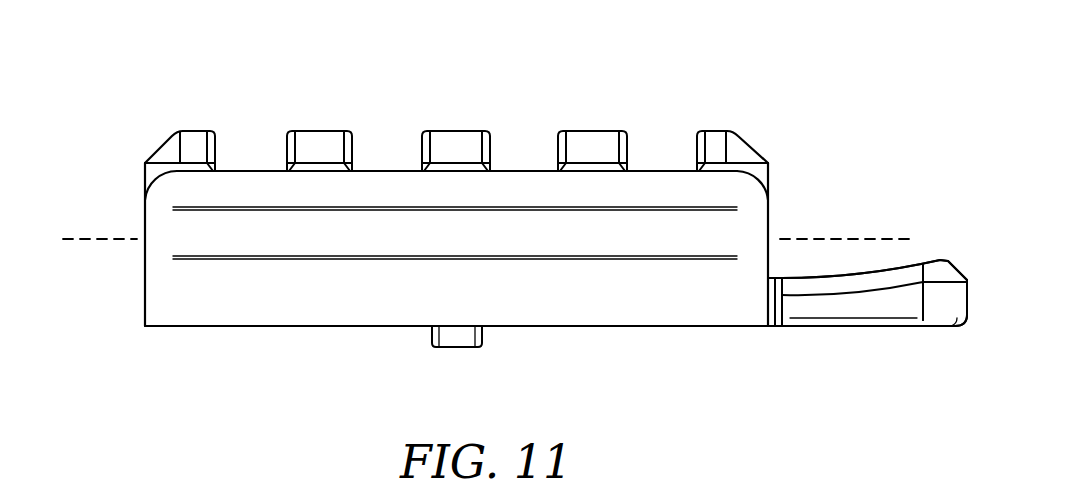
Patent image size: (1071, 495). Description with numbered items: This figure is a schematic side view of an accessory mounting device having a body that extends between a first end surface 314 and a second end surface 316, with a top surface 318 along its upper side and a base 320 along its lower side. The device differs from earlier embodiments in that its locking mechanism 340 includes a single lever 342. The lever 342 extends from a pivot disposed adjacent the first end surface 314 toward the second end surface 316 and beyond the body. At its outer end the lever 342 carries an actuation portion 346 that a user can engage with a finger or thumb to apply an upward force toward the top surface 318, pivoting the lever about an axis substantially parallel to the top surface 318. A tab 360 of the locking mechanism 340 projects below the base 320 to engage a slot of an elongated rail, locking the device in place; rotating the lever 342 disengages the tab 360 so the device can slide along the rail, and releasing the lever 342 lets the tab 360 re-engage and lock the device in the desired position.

The first end surface 314 is at (143, 218).
The second end surface 316 is at (770, 218).
The top surface 318 is at (473, 103).
The rail body base 320 is at (248, 325).
The locking mechanism 340 is at (802, 342).
The lever 342 is at (872, 215).
The actuation portion 346 is at (892, 327).
The tab 360 is at (453, 347).